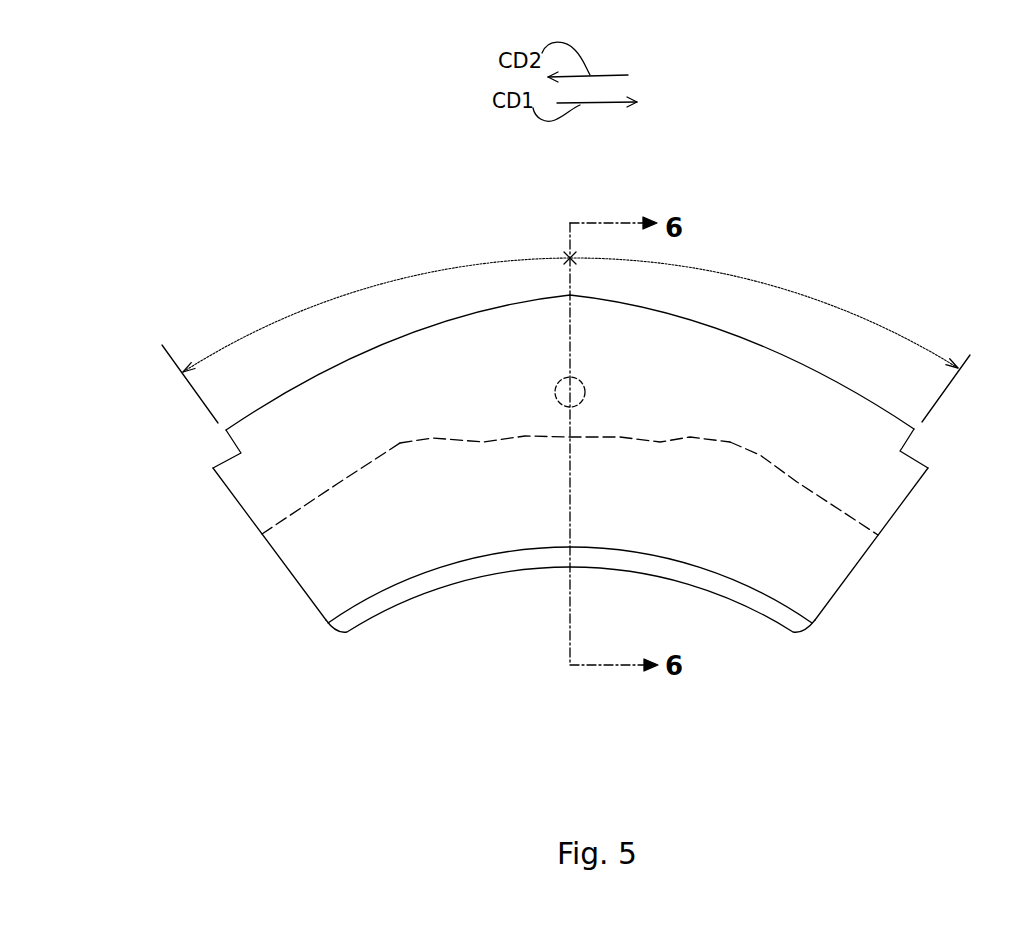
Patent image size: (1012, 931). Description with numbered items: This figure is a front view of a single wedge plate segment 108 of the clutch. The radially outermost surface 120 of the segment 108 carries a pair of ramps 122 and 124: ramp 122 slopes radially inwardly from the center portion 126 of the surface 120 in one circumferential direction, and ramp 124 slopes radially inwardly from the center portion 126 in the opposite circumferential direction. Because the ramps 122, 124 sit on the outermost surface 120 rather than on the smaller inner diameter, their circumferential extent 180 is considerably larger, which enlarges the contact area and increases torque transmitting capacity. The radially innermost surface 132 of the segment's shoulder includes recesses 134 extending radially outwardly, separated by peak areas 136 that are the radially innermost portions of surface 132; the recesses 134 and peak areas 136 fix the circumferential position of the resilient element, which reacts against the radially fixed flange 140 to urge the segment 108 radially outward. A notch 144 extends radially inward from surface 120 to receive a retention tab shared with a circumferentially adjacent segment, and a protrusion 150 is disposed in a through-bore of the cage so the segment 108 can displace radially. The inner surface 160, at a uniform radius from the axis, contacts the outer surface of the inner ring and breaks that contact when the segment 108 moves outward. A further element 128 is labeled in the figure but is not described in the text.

The wedge plate segment 108 is at (757, 176).
The radially outermost surface 120 is at (440, 237).
The ramp 122 is at (732, 330).
The ramp 124 is at (415, 330).
The center portion 126 is at (568, 295).
The end portion 128 is at (1004, 492).
The radially innermost surface 132 is at (621, 435).
The recess 134 is at (400, 443).
The peak area 136 is at (518, 438).
The flange 140 is at (922, 450).
The notch 144 is at (218, 452).
The protrusion 150 is at (553, 392).
The inner surface 160 is at (750, 610).
The circumferential extent 180 is at (292, 315).